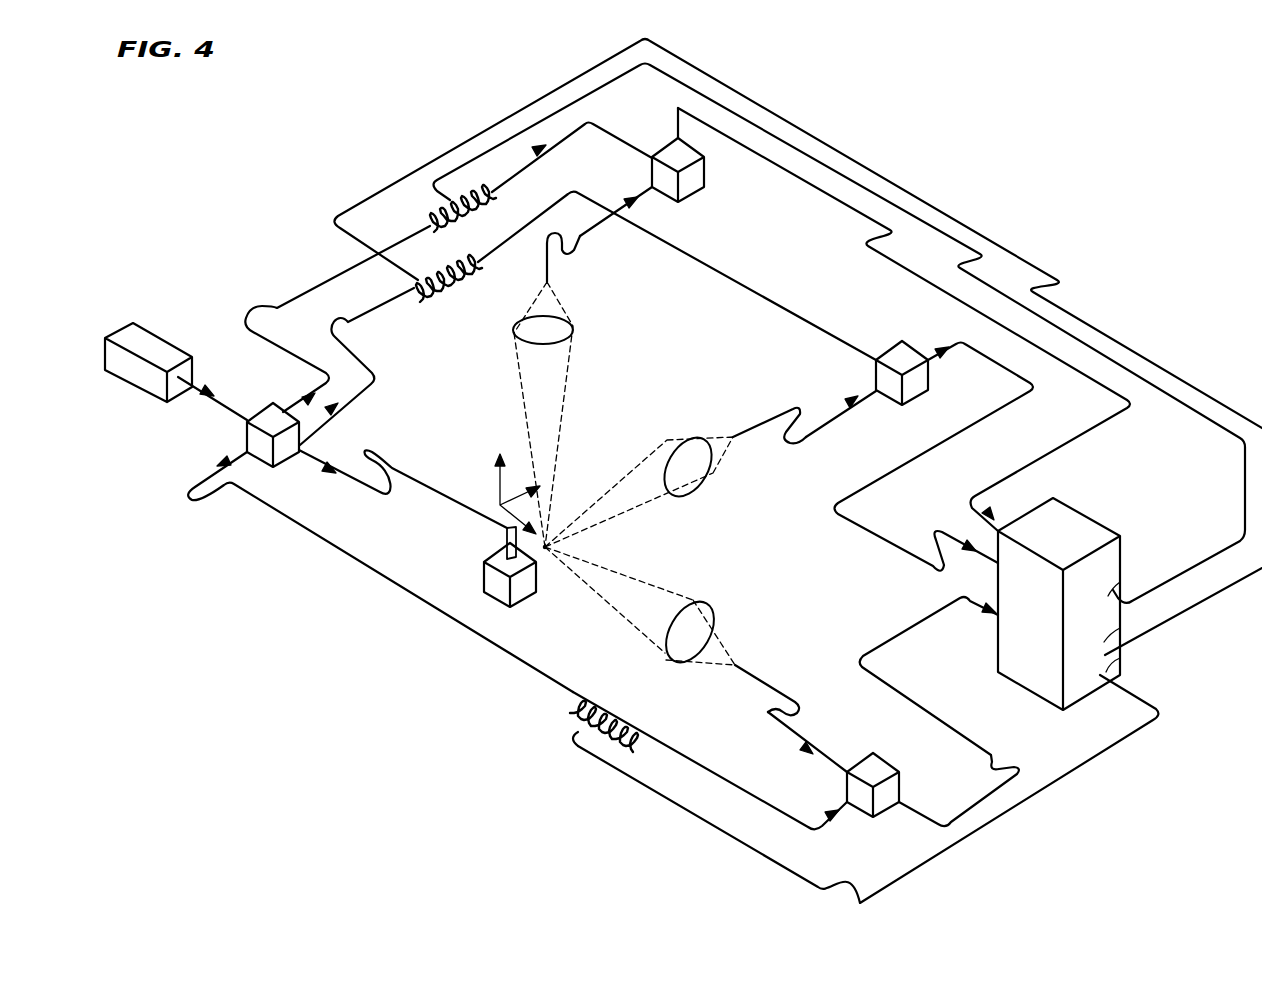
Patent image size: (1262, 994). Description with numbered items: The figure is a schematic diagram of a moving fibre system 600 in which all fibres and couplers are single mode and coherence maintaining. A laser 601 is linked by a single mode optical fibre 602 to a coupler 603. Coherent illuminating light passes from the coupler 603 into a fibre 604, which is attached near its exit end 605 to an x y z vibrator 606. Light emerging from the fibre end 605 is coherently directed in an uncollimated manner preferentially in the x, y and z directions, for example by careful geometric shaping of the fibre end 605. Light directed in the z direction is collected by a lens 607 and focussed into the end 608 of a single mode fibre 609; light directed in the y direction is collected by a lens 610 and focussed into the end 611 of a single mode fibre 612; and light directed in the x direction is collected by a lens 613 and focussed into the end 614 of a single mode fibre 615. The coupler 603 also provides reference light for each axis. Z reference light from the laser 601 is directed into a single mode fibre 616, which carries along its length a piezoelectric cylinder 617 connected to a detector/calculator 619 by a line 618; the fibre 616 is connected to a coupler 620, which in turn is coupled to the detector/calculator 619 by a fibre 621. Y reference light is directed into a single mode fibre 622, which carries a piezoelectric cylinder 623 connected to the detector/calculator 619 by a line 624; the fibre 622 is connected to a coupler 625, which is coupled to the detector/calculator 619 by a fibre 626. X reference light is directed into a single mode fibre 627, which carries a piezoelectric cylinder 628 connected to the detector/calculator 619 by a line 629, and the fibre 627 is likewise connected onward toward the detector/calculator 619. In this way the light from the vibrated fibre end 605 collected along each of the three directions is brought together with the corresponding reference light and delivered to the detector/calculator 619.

The moving fibre system 600 is at (1107, 212).
The laser 601 is at (147, 347).
The single mode optical fibre 602 is at (198, 385).
The coupler 603 is at (247, 430).
The fibre 604 is at (437, 487).
The exit end 605 is at (550, 538).
The x y z vibrator 606 is at (522, 583).
The lens 607 is at (708, 620).
The end 608 is at (758, 663).
The single mode fibre 609 is at (802, 706).
The lens 610 is at (560, 330).
The end 611 is at (543, 282).
The single mode fibre 612 is at (598, 228).
The lens 613 is at (672, 455).
The end 614 is at (738, 432).
The single mode fibre 615 is at (790, 440).
The single mode fibre 616 is at (380, 577).
The piezoelectric cylinder 617 is at (572, 704).
The line 618 is at (720, 843).
The detector/calculator 619 is at (1118, 667).
The coupler 620 is at (885, 762).
The fibre 621 is at (943, 716).
The single mode fibre 622 is at (292, 297).
The piezoelectric cylinder 623 is at (500, 195).
The line 624 is at (458, 183).
The coupler 625 is at (705, 185).
The fibre 626 is at (915, 278).
The single mode fibre 627 is at (355, 333).
The piezoelectric cylinder 628 is at (477, 283).
The line 629 is at (375, 190).